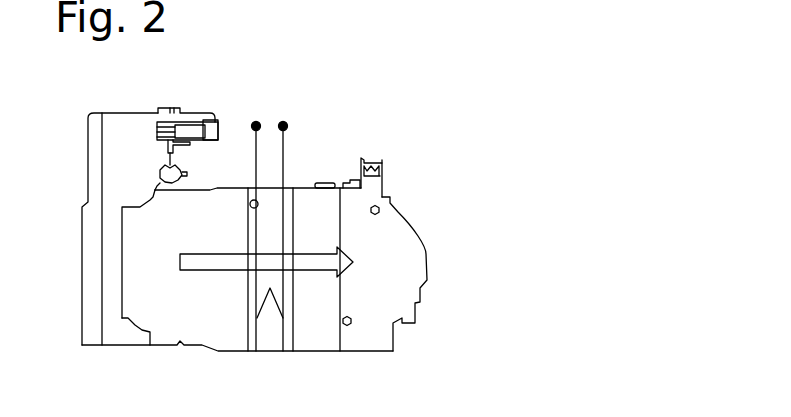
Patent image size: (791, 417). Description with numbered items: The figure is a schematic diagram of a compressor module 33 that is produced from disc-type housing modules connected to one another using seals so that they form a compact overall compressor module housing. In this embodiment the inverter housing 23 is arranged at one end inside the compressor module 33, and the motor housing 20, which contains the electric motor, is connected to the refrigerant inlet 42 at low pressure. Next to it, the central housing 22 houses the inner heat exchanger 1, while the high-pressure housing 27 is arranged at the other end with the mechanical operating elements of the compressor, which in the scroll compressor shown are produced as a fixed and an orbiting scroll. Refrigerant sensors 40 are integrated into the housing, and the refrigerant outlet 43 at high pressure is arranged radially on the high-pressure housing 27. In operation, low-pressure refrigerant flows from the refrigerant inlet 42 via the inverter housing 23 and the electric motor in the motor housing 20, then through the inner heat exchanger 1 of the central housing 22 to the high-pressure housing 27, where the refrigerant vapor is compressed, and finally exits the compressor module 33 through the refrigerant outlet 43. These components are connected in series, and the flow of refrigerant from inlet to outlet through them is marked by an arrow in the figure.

The inner heat exchanger 1 is at (267, 197).
The motor housing 20 is at (202, 338).
The central housing 22 is at (342, 352).
The inverter housing 23 is at (123, 345).
The high-pressure housing 27 is at (370, 333).
The compressor module 33 is at (400, 108).
The refrigerant sensors 40 is at (379, 208).
The refrigerant inlet 42 is at (170, 163).
The refrigerant outlet 43 is at (386, 163).